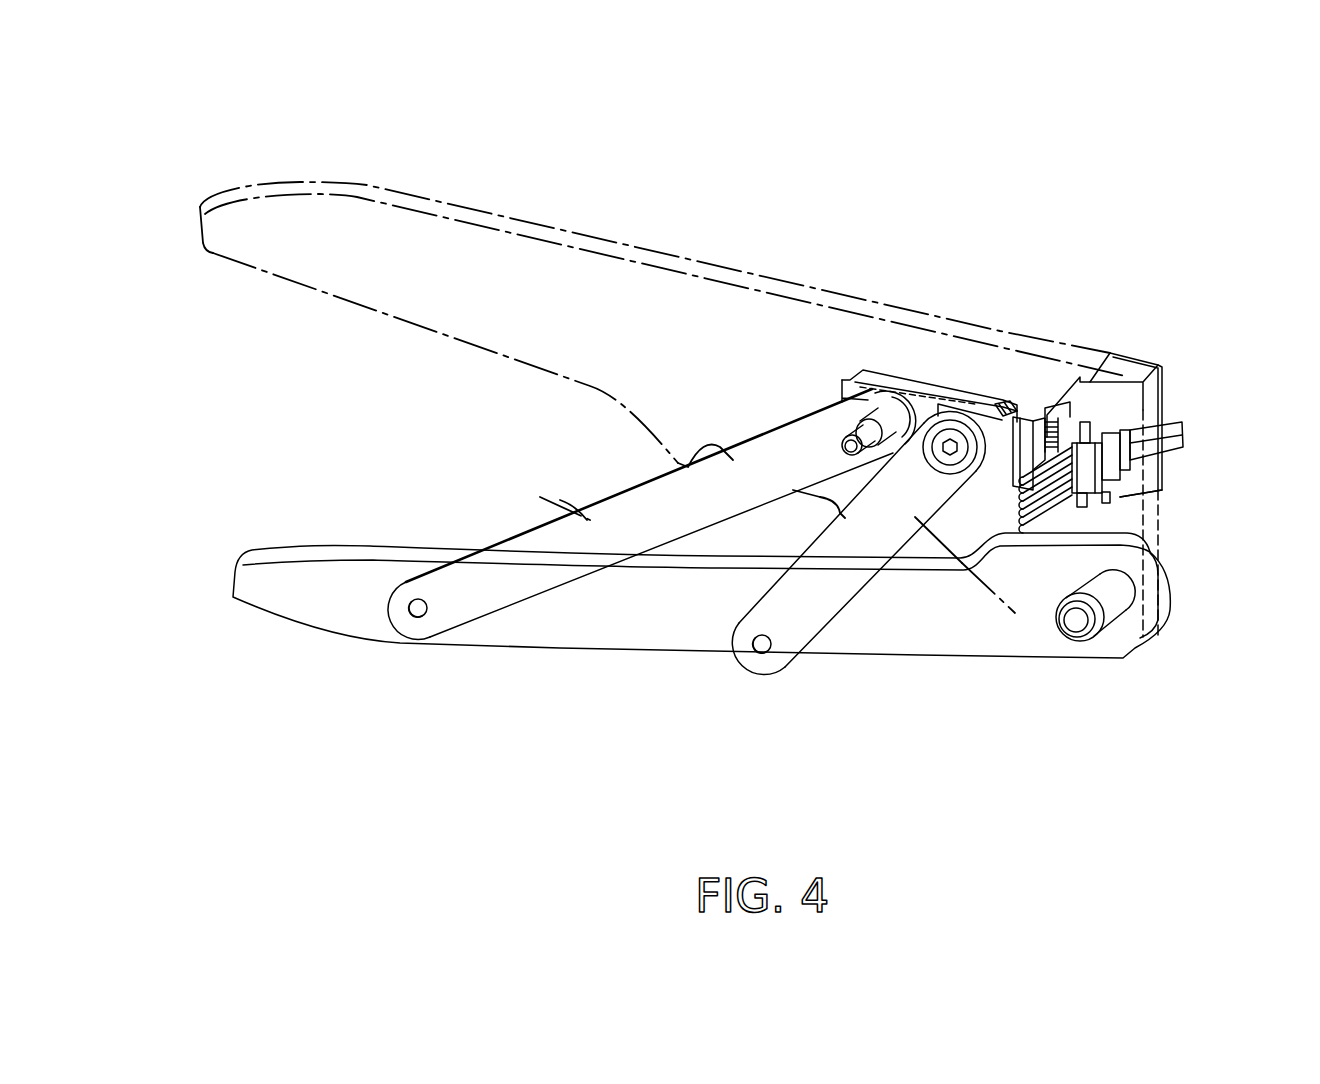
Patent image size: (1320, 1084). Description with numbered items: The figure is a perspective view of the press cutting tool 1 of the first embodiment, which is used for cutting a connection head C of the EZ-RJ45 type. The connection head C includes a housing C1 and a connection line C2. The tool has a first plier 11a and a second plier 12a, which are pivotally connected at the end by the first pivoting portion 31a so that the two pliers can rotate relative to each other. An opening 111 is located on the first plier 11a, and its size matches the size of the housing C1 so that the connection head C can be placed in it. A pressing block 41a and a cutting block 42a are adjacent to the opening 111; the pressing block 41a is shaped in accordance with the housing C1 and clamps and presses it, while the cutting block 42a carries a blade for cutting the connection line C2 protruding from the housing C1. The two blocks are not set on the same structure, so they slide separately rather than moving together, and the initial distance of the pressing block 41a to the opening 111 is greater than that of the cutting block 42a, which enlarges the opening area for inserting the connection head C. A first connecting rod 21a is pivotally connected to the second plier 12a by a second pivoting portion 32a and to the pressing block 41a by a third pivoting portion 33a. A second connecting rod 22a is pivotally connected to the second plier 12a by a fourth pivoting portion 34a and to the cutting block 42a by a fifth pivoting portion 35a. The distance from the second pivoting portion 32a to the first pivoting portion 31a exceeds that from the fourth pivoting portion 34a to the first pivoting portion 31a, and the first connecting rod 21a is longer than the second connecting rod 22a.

The press cutting tool 1 is at (1230, 151).
The first plier 11a is at (225, 226).
The second plier 12a is at (263, 578).
The opening 111 is at (1130, 500).
The first connecting rod 21a is at (591, 521).
The second connecting rod 22a is at (820, 610).
The first pivoting portion 31a is at (1073, 632).
The second pivoting portion 32a is at (417, 618).
The third pivoting portion 33a is at (868, 418).
The fourth pivoting portion 34a is at (757, 655).
The fifth pivoting portion 35a is at (950, 446).
The pressing block 41a is at (930, 392).
The cutting block 42a is at (1018, 437).
The connection head C is at (1217, 301).
The housing C1 is at (1110, 432).
The connection line C2 is at (1087, 420).